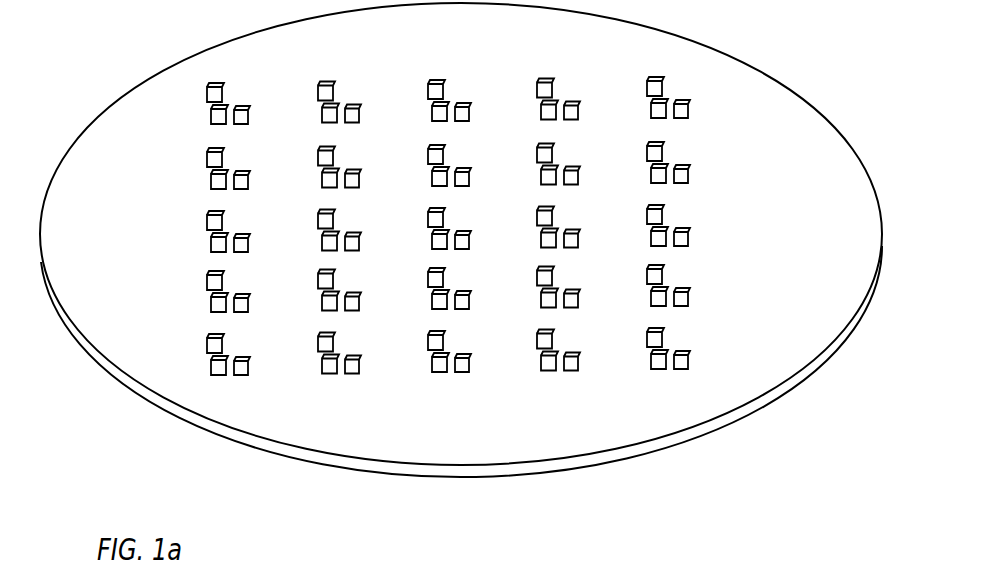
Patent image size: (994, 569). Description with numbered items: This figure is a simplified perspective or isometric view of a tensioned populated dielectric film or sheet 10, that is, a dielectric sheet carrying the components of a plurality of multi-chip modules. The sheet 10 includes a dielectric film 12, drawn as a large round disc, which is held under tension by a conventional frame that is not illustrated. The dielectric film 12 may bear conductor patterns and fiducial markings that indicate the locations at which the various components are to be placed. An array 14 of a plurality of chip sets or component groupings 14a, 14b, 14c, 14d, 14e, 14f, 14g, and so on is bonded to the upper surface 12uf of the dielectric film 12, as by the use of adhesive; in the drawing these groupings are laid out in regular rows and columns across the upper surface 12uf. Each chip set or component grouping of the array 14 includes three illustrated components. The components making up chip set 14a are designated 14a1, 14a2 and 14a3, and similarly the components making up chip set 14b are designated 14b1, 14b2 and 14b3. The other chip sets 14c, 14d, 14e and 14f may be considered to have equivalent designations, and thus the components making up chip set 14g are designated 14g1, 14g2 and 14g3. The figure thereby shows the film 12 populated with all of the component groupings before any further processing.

The tensioned populated dielectric film or sheet 10 is at (249, 519).
The dielectric film 12 is at (228, 433).
The upper surface of dielectric film 12uf is at (107, 155).
The array of chip-sets or component groupings 14 is at (160, 58).
The chip set or component grouping 14a is at (226, 372).
The component 14a1 is at (228, 351).
The component 14a2 is at (226, 381).
The component 14a3 is at (254, 372).
The chip set or component grouping 14b is at (216, 290).
The component 14b1 is at (226, 289).
The component 14b2 is at (213, 305).
The component 14b3 is at (254, 309).
The chip set or component grouping 14c is at (200, 231).
The chip set or component grouping 14d is at (198, 175).
The chip set or component grouping 14e is at (200, 108).
The chip set or component grouping 14f is at (358, 88).
The chip set or component grouping 14g is at (344, 155).
The component 14g1 is at (320, 147).
The component 14g2 is at (323, 178).
The component 14g3 is at (360, 176).